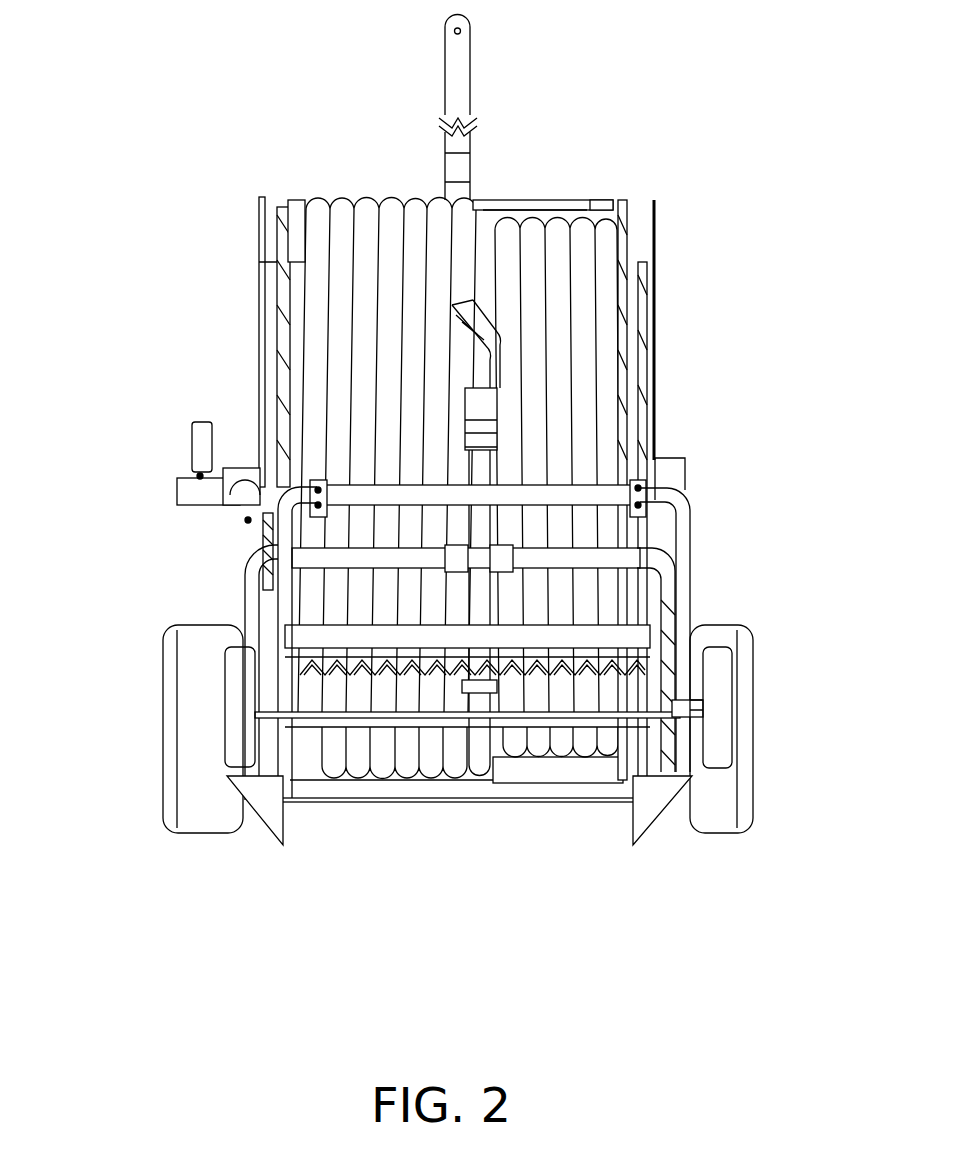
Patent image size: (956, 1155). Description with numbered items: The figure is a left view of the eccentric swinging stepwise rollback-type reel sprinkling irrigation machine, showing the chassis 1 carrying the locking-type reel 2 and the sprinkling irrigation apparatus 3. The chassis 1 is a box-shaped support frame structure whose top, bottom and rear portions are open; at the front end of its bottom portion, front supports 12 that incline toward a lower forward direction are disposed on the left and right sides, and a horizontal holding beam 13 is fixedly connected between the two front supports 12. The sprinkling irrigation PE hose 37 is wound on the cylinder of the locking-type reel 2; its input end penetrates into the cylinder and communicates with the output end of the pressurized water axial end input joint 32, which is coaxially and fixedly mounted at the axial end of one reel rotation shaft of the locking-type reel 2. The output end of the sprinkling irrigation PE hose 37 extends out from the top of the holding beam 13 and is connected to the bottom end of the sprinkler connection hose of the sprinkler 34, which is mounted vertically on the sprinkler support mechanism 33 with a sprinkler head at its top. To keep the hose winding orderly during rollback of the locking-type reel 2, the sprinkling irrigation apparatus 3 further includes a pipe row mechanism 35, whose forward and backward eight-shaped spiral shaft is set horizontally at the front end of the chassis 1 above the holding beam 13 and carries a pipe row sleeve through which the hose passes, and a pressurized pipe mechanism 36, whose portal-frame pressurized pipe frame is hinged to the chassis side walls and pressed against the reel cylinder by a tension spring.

The chassis 1 is at (660, 790).
The locking-type reel 2 is at (660, 202).
The sprinkling irrigation apparatus 3 is at (500, 410).
The front supports 12 is at (663, 603).
The holding beam 13 is at (482, 802).
The pressurized water axial end input joint 32 is at (193, 488).
The sprinkler support mechanism 33 is at (565, 497).
The sprinkler 34 is at (497, 363).
The pipe row mechanism 35 is at (535, 673).
The pressurized pipe mechanism 36 is at (523, 200).
The sprinkling irrigation PE hose 37 is at (348, 220).